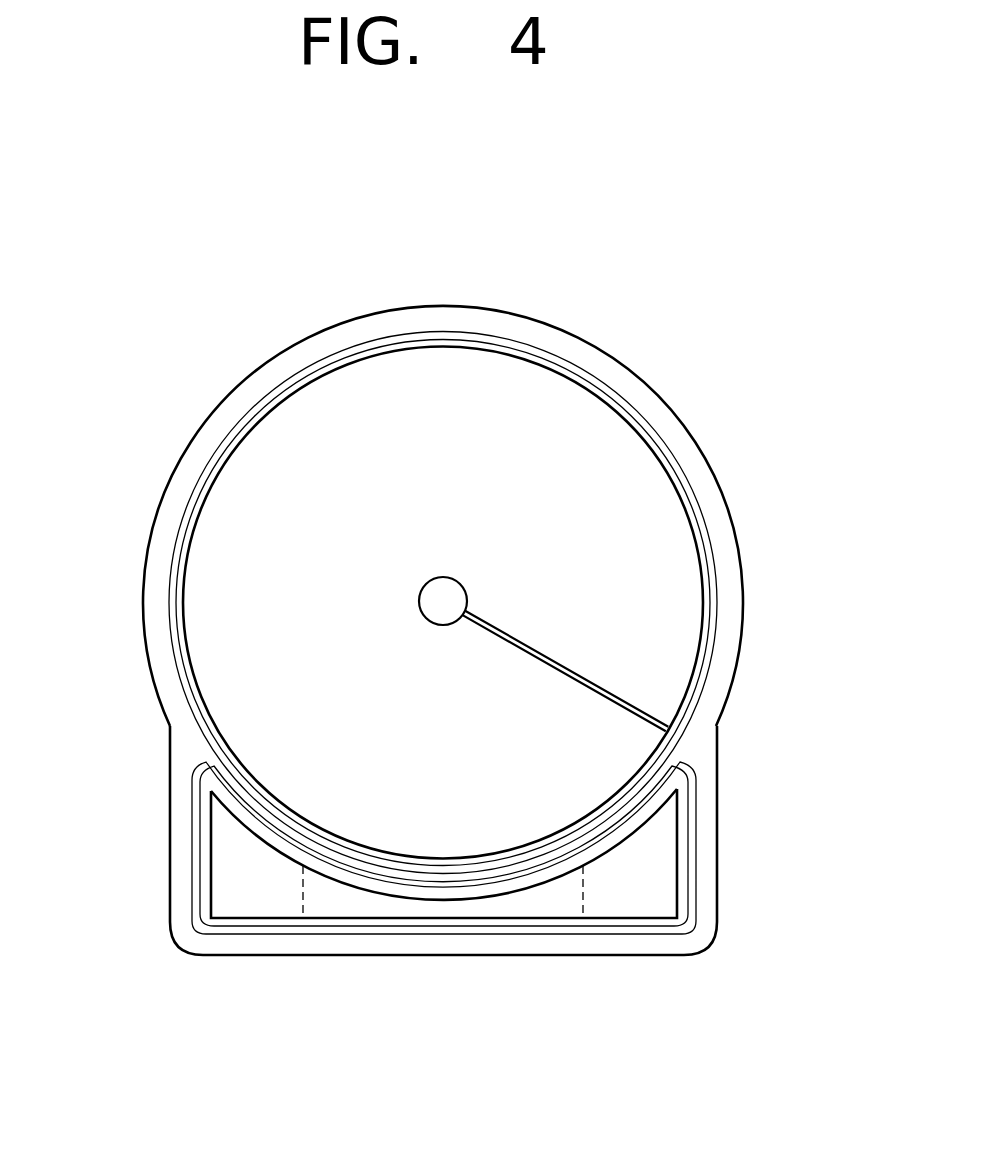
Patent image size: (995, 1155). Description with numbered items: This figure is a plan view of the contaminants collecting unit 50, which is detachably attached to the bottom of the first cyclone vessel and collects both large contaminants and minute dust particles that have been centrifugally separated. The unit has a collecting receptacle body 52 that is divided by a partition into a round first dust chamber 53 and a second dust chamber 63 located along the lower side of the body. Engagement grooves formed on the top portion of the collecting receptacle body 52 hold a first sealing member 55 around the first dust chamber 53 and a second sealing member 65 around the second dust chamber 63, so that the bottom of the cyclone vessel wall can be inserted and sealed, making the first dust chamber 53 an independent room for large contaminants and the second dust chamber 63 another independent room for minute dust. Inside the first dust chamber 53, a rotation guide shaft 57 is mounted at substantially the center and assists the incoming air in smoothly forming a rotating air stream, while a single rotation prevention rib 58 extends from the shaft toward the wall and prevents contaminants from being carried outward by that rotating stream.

The contaminants collecting unit 50 is at (748, 317).
The collecting receptacle body 52 is at (683, 421).
The first dust chamber 53 is at (227, 530).
The first sealing member 55 is at (680, 730).
The rotation guide shaft 57 is at (457, 597).
The rotation prevention rib 58 is at (600, 687).
The second dust chamber 63 is at (225, 870).
The second sealing member 65 is at (697, 870).